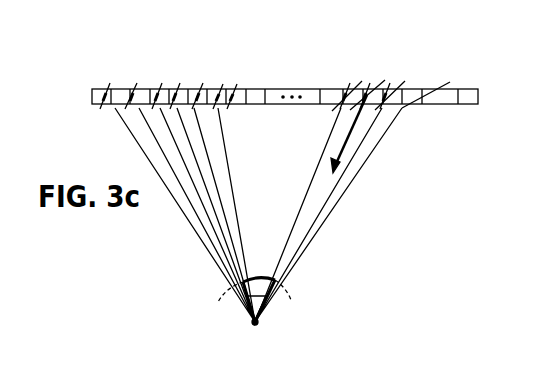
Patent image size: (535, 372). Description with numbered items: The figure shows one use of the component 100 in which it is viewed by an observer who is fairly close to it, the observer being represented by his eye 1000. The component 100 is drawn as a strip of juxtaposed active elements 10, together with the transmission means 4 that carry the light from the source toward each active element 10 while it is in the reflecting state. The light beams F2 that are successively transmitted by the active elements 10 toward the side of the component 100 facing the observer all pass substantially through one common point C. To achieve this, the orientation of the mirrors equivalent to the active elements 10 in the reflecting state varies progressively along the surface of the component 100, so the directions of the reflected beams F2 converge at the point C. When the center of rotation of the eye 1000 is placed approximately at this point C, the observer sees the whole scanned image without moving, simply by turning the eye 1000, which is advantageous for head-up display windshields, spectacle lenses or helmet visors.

The component 100 is at (384, 63).
The active element 10 is at (240, 84).
The transmission means 4 is at (450, 82).
The eye 1000 is at (258, 226).
The light beam F2 is at (381, 96).
The common point C is at (263, 335).